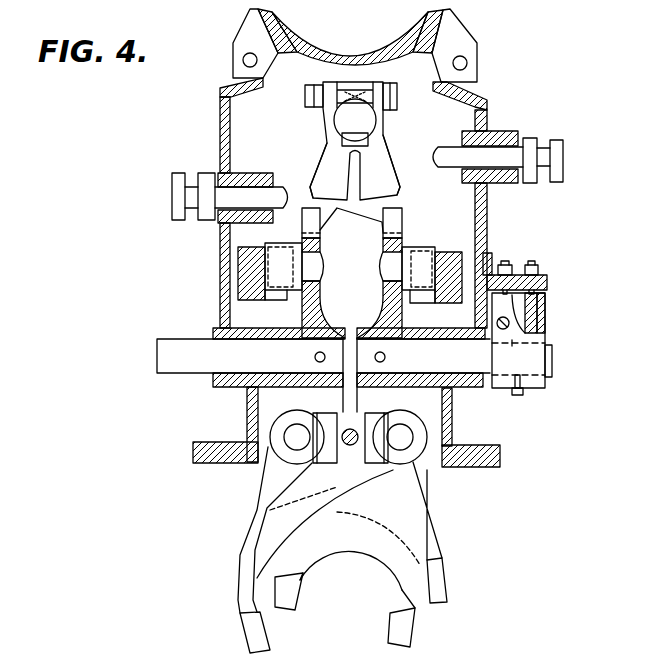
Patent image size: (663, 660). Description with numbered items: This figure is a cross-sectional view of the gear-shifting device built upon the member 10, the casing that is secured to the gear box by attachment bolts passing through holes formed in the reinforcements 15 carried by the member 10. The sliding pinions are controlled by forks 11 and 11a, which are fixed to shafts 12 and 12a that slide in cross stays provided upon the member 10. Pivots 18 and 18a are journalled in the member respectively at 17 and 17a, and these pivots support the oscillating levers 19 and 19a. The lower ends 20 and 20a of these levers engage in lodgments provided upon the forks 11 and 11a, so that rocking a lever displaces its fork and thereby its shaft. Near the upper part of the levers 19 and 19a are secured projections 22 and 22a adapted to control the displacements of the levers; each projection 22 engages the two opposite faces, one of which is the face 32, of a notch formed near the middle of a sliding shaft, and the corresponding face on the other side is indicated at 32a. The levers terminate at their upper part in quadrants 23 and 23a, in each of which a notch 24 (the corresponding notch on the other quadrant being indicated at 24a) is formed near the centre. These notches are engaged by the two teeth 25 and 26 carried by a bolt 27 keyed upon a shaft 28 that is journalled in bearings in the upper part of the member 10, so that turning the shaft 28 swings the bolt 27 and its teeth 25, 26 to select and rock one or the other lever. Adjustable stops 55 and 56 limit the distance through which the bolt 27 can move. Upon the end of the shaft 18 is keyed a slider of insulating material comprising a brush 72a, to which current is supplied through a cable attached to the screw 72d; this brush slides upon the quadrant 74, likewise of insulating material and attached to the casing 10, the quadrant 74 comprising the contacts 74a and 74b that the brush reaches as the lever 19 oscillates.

The member 10 is at (480, 238).
The fork 11 is at (415, 600).
The fork 11a is at (240, 590).
The shaft 12 is at (400, 437).
The shaft 12a is at (297, 437).
The reinforcements 15 is at (478, 458).
The journal 17 is at (457, 334).
The journal 17a is at (228, 330).
The pivot 18 is at (530, 362).
The pivot 18a is at (196, 366).
The oscillating lever 19 is at (440, 420).
The oscillating lever 19a is at (320, 388).
The lower end 20 is at (413, 490).
The lower end 20a is at (272, 462).
The projection 22 is at (422, 270).
The projection 22a is at (281, 268).
The quadrant 23 is at (395, 216).
The quadrant 23a is at (312, 230).
The notch 24 is at (399, 252).
The roller 24a is at (304, 244).
The tooth 25 is at (397, 194).
The tooth 26 is at (312, 192).
The bolt 27 is at (372, 170).
The shaft 28 is at (345, 125).
The face 32 is at (453, 252).
The spring 32a is at (238, 268).
The adjustable stop 55 is at (495, 150).
The adjustable stop 56 is at (240, 200).
The brush 72a is at (548, 306).
The screw 72d is at (512, 328).
The quadrant 74 is at (548, 284).
The contact 74a is at (538, 262).
The contact 74b is at (506, 264).